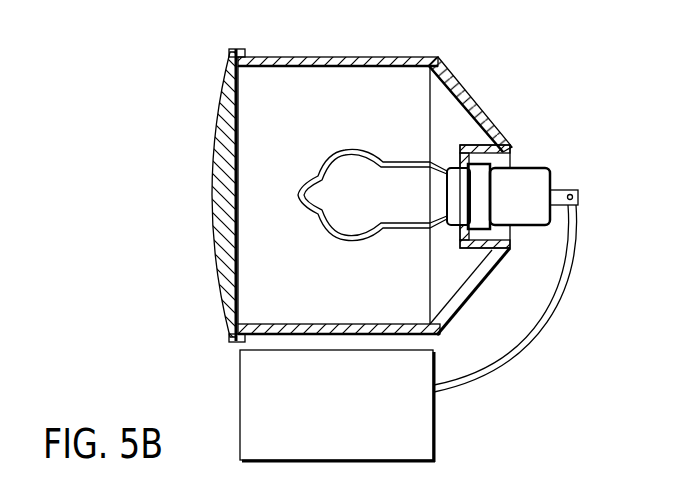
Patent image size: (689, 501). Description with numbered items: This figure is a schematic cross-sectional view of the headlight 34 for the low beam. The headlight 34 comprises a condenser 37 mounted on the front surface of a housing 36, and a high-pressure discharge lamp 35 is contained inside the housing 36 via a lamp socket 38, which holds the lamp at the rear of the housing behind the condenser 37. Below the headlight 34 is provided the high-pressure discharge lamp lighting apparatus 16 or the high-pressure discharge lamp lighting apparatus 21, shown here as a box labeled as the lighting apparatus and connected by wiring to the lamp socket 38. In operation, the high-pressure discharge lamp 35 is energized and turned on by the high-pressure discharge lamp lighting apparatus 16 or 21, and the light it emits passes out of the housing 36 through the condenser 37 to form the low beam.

The headlight for the low beam 34 is at (209, 110).
The high-pressure discharge lamp 35 is at (337, 158).
The housing 36 is at (385, 57).
The condenser 37 is at (215, 208).
The lamp socket 38 is at (525, 172).
The high-pressure discharge lamp lighting apparatus 16 is at (434, 436).
The high-pressure discharge lamp lighting apparatus 21 is at (408, 333).